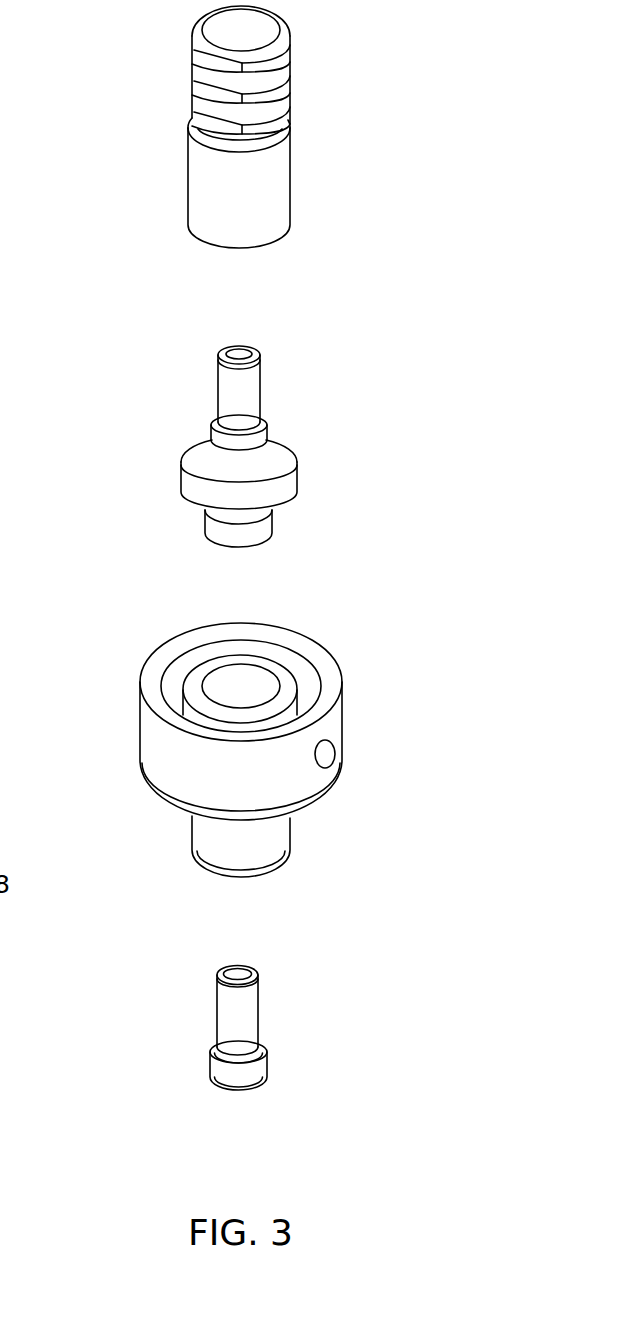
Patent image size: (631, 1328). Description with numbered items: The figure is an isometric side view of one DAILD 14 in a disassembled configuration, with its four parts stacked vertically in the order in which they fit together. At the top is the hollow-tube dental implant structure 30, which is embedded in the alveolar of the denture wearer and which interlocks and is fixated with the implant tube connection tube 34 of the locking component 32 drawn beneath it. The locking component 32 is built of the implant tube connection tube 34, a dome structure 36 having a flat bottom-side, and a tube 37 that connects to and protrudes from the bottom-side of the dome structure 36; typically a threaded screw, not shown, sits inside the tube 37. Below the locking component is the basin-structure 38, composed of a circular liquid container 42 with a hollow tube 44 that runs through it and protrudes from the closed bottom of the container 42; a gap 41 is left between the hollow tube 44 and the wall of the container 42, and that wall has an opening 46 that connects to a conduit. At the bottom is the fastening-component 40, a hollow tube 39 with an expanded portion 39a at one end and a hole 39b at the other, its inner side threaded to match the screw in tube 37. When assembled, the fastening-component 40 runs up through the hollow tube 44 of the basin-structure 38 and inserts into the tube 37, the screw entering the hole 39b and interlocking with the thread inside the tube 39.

The DAILD 14 is at (350, 344).
The hollow-tube dental implant structure 30 is at (293, 177).
The locking component 32 is at (93, 430).
The implant tube connection tube 34 is at (222, 396).
The dome structure 36 is at (185, 475).
The tube 37 is at (203, 522).
The basin-structure 38 is at (356, 586).
The gap 41 is at (175, 692).
The circular liquid container 42 is at (192, 772).
The hollow tube 44 is at (192, 716).
The opening 46 is at (323, 753).
The fastening-component 40 is at (357, 1002).
The hollow tube 39 is at (223, 1010).
The expanded portion 39a is at (221, 1075).
The hole 39b is at (236, 977).